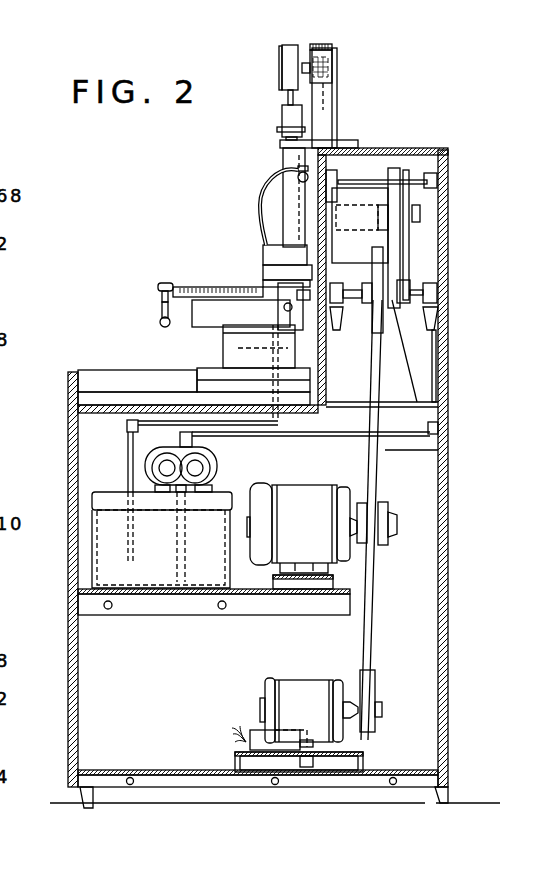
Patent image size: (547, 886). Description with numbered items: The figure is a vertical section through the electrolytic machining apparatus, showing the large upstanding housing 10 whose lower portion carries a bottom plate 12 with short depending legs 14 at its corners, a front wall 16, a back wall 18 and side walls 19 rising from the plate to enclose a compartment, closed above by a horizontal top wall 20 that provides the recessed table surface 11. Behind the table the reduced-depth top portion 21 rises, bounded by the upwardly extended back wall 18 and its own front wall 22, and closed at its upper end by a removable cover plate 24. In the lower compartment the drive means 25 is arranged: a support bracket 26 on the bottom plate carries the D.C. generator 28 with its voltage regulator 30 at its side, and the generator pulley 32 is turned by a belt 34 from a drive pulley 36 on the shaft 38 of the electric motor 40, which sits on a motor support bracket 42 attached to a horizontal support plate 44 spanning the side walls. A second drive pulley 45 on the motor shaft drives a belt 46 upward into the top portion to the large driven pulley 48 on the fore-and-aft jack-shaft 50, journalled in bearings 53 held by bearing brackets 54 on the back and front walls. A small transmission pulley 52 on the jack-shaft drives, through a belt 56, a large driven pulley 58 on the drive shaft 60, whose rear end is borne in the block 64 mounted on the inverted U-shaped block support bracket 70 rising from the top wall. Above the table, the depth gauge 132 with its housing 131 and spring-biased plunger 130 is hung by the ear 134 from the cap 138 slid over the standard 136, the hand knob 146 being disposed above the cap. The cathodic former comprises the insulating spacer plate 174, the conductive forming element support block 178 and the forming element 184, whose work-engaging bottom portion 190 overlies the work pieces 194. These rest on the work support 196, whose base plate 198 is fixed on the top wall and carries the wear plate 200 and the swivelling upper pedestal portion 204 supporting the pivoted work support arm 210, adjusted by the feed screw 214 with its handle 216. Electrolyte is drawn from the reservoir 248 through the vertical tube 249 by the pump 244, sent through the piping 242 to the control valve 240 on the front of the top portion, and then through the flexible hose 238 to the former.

The housing 10 is at (68, 552).
The table surface 11 is at (70, 400).
The bottom plate 12 is at (170, 772).
The legs 14 is at (82, 800).
The front wall 16 is at (70, 678).
The back wall 18 is at (450, 600).
The side walls 19 is at (152, 667).
The top wall 20 is at (100, 415).
The top portion 21 is at (413, 147).
The front wall 22 is at (322, 360).
The cover plate 24 is at (380, 147).
The drive means 25 is at (260, 682).
The support bracket 26 is at (236, 757).
The D.C. generator 28 is at (295, 692).
The voltage regulator 30 is at (253, 730).
The pulley 32 is at (373, 697).
The belt 34 is at (370, 640).
The drive pulley 36 is at (373, 502).
The motor shaft 38 is at (398, 517).
The electric motor 40 is at (288, 500).
The motor support bracket 42 is at (325, 592).
The horizontal support plate 44 is at (240, 608).
The drive pulley 45 is at (390, 542).
The belt 46 is at (438, 452).
The driven pulley 48 is at (385, 322).
The jack-shaft 50 is at (440, 296).
The transmission pulley 52 is at (413, 277).
The bearings 53 is at (430, 288).
The bearing brackets 54 is at (440, 315).
The belt 56 is at (408, 235).
The driven pulley 58 is at (433, 185).
The drive shaft 60 is at (420, 214).
The block 64 is at (357, 187).
The block support bracket 70 is at (418, 376).
The plunger 130 is at (282, 110).
The housing 131 is at (283, 53).
The depth gauge 132 is at (279, 74).
The ear 134 is at (312, 44).
The standard 136 is at (325, 108).
The cap 138 is at (337, 73).
The hand knob 146 is at (331, 45).
The spacer plate 174 is at (262, 249).
The forming element support block 178 is at (262, 256).
The forming element 184 is at (262, 273).
The work-engaging bottom portion 190 is at (237, 292).
The work pieces 194 is at (263, 303).
The work support 196 is at (93, 387).
The base plate 198 is at (132, 392).
The wear plate 200 is at (205, 380).
The upper pedestal portion 204 is at (192, 323).
The work support arm 210 is at (153, 318).
The feed screw 214 is at (173, 283).
The handle 216 is at (157, 307).
The hose 238 is at (258, 200).
The control valve 240 is at (283, 157).
The piping 242 is at (340, 180).
The pump 244 is at (215, 460).
The reservoir 248 is at (100, 513).
The vertical tube 249 is at (127, 455).